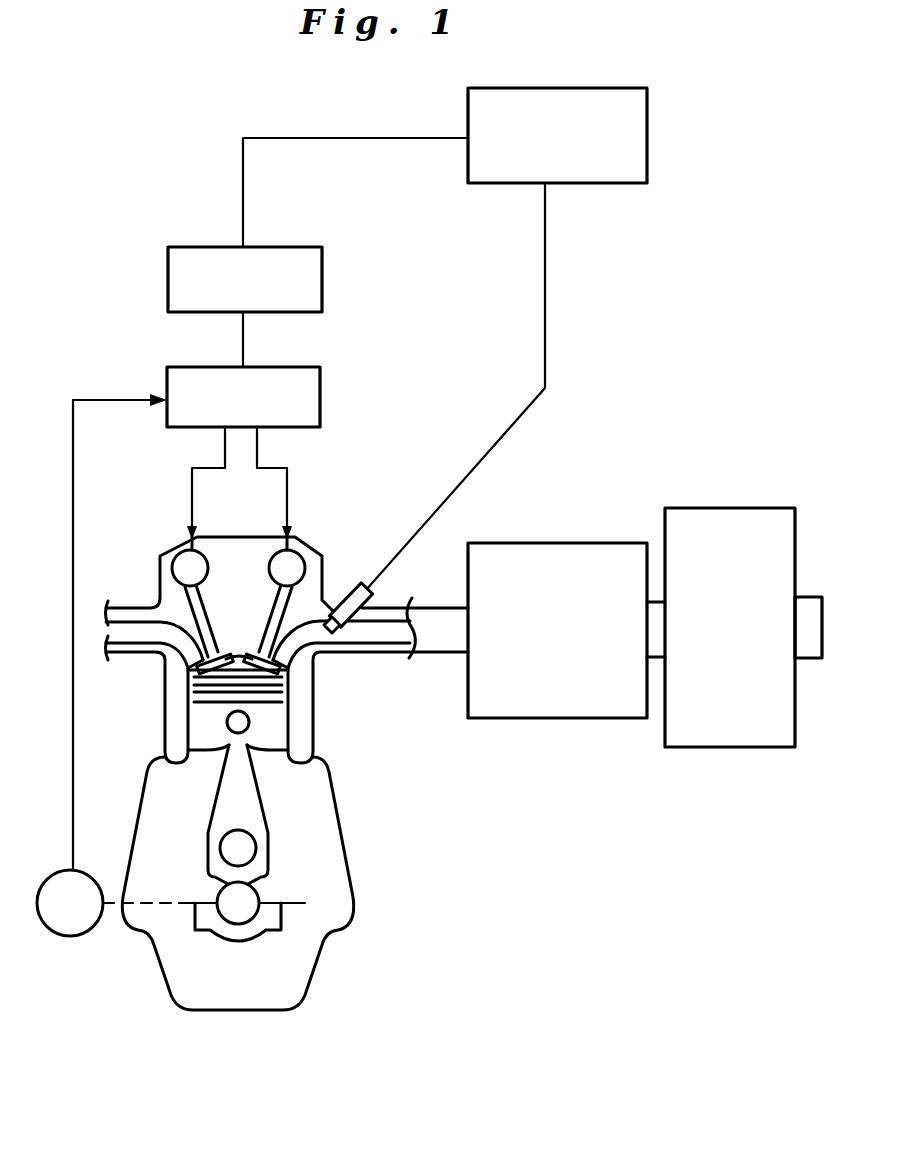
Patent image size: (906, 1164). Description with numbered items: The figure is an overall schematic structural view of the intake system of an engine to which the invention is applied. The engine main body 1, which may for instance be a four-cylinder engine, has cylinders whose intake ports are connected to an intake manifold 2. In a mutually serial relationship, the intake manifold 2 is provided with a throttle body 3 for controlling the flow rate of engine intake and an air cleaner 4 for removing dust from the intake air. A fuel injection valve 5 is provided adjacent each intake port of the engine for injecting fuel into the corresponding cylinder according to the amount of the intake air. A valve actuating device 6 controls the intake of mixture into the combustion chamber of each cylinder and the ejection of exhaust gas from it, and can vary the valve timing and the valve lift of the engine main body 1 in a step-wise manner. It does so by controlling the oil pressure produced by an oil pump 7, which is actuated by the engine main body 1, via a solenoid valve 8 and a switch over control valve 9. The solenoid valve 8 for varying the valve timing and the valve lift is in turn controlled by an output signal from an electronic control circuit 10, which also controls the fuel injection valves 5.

The engine main body 1 is at (287, 753).
The intake manifold 2 is at (316, 662).
The throttle body 3 is at (562, 543).
The air cleaner 4 is at (715, 508).
The fuel injection valve 5 is at (372, 590).
The valve actuating device 6 is at (234, 552).
The oil pump 7 is at (82, 921).
The solenoid valve 8 is at (322, 268).
The switch over control valve 9 is at (320, 385).
The electronic control circuit 10 is at (647, 138).